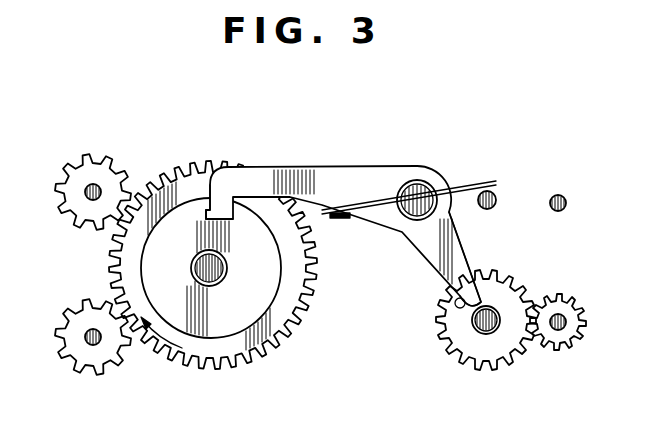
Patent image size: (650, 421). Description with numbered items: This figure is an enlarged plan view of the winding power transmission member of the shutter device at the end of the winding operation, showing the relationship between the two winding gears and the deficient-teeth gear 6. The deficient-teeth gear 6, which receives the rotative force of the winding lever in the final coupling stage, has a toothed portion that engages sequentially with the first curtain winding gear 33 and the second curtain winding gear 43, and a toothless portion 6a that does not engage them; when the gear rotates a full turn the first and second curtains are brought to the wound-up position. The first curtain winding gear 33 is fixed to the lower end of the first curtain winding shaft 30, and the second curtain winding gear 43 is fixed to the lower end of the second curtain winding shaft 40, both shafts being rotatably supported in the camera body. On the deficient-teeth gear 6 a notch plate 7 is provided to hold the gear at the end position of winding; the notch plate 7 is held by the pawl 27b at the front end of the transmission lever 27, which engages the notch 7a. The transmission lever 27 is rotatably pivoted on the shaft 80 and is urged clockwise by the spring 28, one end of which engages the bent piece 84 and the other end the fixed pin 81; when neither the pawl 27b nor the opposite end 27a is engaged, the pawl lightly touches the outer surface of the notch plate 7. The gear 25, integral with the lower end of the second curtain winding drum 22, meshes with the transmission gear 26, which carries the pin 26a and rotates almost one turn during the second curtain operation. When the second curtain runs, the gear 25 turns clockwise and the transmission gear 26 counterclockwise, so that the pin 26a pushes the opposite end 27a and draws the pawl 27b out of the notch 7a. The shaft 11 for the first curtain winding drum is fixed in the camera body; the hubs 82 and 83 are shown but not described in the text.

The deficient-teeth gear 6 is at (280, 332).
The toothless portion 6a is at (122, 264).
The notch plate 7 is at (232, 322).
The notch 7a is at (211, 219).
The shaft 11 is at (559, 195).
The second curtain winding drum 22 is at (569, 318).
The gear 25 is at (566, 340).
The transmission gear 26 is at (499, 352).
The pin 26a is at (455, 300).
The transmission lever 27 is at (330, 166).
The opposite end 27a is at (472, 262).
The pawl 27b is at (205, 200).
The spring 28 is at (474, 186).
The first curtain winding shaft 30 is at (84, 330).
The first curtain winding gear 33 is at (80, 358).
The second curtain winding shaft 40 is at (86, 203).
The second curtain winding gear 43 is at (90, 157).
The shaft 80 is at (420, 180).
The fixed pin 81 is at (496, 205).
The shaft 82 is at (478, 326).
The shaft 83 is at (221, 268).
The bent piece 84 is at (343, 220).